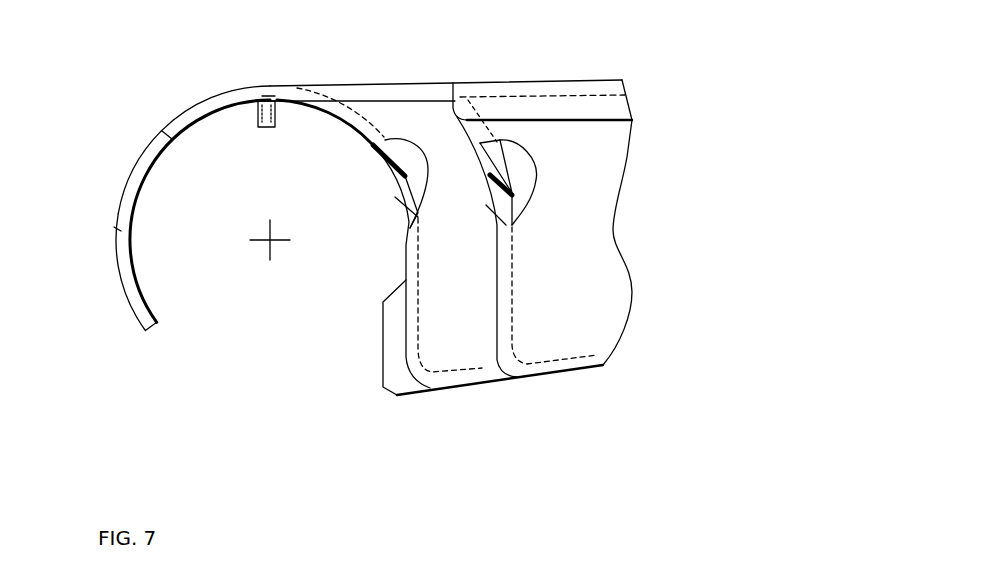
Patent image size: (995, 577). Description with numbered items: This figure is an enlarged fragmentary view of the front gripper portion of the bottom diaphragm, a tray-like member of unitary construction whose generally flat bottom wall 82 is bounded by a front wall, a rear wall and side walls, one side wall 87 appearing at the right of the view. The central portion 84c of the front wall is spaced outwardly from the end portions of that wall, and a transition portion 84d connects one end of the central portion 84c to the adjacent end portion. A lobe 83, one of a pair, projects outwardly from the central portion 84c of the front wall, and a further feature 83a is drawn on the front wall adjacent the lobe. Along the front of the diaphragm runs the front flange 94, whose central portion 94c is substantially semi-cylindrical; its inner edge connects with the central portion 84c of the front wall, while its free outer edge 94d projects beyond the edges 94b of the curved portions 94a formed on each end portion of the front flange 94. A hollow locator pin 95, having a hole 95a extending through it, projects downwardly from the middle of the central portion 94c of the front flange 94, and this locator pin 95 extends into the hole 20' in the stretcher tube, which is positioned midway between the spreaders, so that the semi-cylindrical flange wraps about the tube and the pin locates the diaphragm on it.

The front flange 94 is at (377, 93).
The curved portion 94a is at (200, 110).
The edge of curved portion 94b is at (167, 137).
The central portion of front flange 94c is at (118, 229).
The free outer edge 94d is at (150, 330).
The locator pin 95 is at (258, 113).
The hole 95a is at (268, 96).
The hole 20' is at (298, 273).
The bottom wall 82 is at (560, 368).
The side wall 87 is at (600, 197).
The transition portion 84d is at (465, 353).
The lobe 83 is at (387, 337).
The central portion of front wall 84c is at (400, 177).
The finger 83a is at (503, 197).